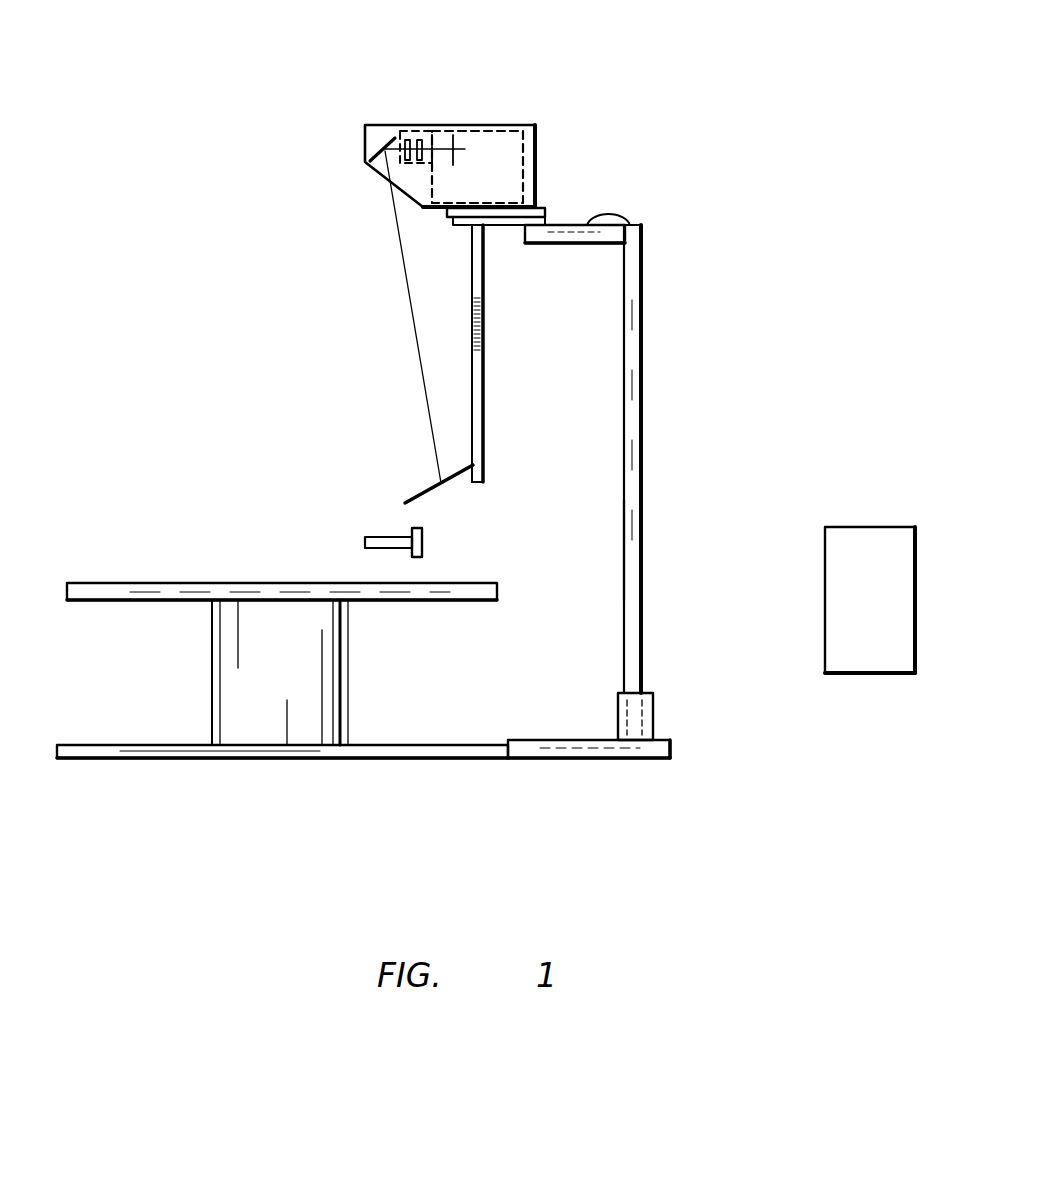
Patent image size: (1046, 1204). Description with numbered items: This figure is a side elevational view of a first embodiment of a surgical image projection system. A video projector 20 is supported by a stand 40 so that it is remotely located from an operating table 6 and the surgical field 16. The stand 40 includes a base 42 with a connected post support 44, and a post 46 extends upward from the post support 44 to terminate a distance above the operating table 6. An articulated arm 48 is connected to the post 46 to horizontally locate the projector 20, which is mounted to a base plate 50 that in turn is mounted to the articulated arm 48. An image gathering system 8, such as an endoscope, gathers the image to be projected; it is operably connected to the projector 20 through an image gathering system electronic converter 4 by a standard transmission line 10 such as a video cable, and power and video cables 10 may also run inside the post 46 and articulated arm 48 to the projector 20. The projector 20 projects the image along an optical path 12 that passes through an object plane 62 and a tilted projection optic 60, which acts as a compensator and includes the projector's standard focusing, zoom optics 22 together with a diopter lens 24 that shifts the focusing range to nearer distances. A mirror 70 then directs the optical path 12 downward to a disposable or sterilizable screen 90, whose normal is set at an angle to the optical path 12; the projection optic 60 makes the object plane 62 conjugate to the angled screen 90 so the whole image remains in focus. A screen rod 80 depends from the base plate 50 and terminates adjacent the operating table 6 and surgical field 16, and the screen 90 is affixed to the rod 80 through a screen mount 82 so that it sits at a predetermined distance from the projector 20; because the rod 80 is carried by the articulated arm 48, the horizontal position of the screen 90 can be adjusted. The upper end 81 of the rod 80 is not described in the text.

The image gathering system electronic converter 4 is at (880, 525).
The operating table 6 is at (108, 583).
The image gathering system 8 is at (423, 533).
The standard transmission line 10 is at (618, 213).
The optical path 12 is at (387, 171).
The surgical field 16 is at (333, 527).
The video projector 20 is at (510, 146).
The focusing, zoom optics 22 is at (420, 130).
The diopter lens 24 is at (407, 130).
The stand 40 is at (642, 377).
The base 42 is at (672, 752).
The post support 44 is at (653, 713).
The post 46 is at (643, 575).
The articulated arm 48 is at (557, 223).
The base plate 50 is at (442, 212).
The tilted projection optic 60 is at (402, 130).
The object plane 62 is at (458, 135).
The mirror 70 is at (368, 135).
The screen rod 80 is at (477, 360).
The upper arm end 81 is at (468, 231).
The screen mount 82 is at (470, 462).
The screen 90 is at (405, 503).